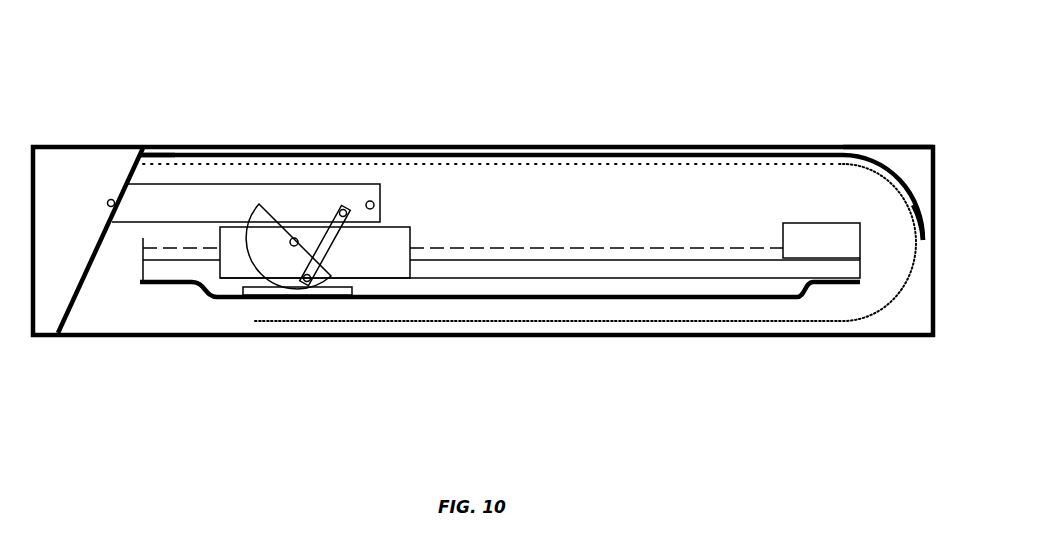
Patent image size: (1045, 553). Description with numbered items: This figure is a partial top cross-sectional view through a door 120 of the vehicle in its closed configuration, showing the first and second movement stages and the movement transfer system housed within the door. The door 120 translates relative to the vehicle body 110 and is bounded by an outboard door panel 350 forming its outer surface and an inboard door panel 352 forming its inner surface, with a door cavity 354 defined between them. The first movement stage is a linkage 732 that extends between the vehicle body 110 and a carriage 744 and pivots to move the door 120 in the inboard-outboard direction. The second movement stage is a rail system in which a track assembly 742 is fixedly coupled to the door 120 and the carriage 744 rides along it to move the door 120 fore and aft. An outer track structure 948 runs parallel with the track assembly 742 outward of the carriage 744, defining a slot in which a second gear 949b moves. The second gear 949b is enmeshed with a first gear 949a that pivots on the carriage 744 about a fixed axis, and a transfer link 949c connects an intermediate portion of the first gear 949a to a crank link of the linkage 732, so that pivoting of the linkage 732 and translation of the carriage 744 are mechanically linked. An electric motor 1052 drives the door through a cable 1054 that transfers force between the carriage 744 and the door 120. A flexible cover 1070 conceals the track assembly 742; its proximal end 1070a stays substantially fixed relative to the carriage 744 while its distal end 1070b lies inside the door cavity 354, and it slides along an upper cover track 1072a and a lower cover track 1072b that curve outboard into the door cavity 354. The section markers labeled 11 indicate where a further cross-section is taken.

The vehicle body 110 is at (60, 147).
The door 120 is at (845, 82).
The outboard door panel 350 is at (822, 338).
The inboard door panel 352 is at (893, 145).
The door cavity 354 is at (693, 187).
The linkage 732 is at (297, 193).
The track assembly 742 is at (474, 268).
The carriage 744 is at (387, 258).
The outer track structure 948 is at (545, 294).
The first gear 949a is at (286, 274).
The second gear 949b is at (253, 294).
The transfer link 949c is at (330, 250).
The electric motor 1052 is at (821, 240).
The cable 1054 is at (690, 248).
The flexible cover 1070 is at (597, 153).
The proximal end 1070a is at (152, 155).
The distal end 1070b is at (923, 237).
The upper cover track 1072a is at (767, 317).
The lower cover track 1072b is at (827, 301).
The section line 11- 11 is at (153, 308).